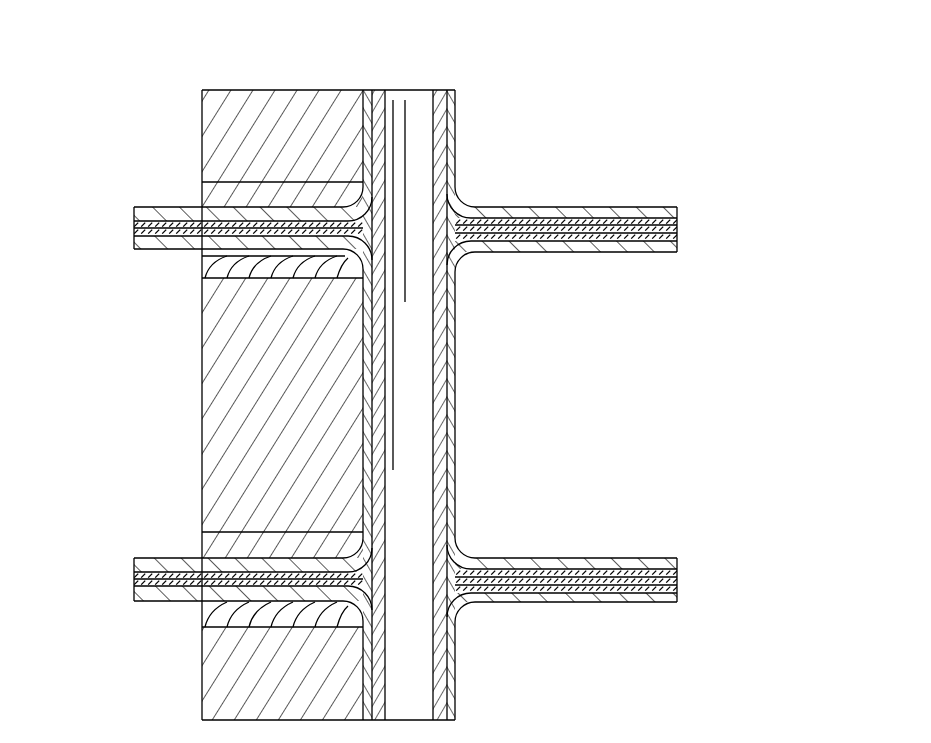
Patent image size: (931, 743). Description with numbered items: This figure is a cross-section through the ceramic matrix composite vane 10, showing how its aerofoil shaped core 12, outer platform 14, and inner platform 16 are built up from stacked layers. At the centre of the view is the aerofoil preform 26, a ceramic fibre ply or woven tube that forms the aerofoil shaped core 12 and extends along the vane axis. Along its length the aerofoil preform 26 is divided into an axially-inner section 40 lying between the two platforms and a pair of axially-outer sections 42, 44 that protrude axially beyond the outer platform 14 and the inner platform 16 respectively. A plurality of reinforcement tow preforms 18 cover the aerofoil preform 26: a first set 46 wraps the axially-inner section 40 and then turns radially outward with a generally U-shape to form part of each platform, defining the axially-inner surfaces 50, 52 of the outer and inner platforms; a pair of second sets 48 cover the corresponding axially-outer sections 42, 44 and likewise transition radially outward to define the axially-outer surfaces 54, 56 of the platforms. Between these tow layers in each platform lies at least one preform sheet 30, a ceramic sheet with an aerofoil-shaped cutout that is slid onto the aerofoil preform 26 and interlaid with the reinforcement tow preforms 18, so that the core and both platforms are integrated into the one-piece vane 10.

The vane 10 is at (622, 152).
The aerofoil shaped core 12 is at (150, 323).
The outer platform 14 is at (130, 215).
The inner platform 16 is at (117, 584).
The reinforcement tow preforms 18 is at (640, 192).
The aerofoil preform 26 is at (440, 90).
The preform sheet 30 is at (660, 231).
The axially-inner section 40 is at (201, 448).
The axially-outer section 42 is at (185, 105).
The axially-outer section 44 is at (169, 675).
The first set 46 is at (201, 384).
The second sets 48 is at (225, 163).
The axially-inner surface 50 is at (188, 246).
The axially-inner surface 52 is at (189, 566).
The axially-outer surface 54 is at (187, 213).
The axially-outer surface 56 is at (165, 588).